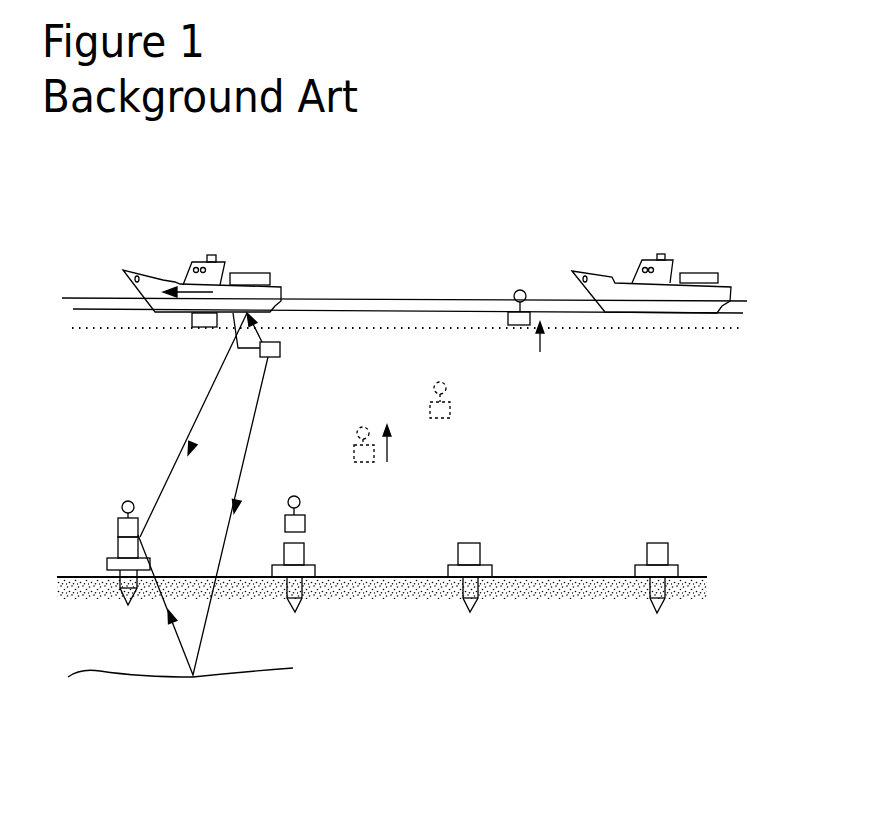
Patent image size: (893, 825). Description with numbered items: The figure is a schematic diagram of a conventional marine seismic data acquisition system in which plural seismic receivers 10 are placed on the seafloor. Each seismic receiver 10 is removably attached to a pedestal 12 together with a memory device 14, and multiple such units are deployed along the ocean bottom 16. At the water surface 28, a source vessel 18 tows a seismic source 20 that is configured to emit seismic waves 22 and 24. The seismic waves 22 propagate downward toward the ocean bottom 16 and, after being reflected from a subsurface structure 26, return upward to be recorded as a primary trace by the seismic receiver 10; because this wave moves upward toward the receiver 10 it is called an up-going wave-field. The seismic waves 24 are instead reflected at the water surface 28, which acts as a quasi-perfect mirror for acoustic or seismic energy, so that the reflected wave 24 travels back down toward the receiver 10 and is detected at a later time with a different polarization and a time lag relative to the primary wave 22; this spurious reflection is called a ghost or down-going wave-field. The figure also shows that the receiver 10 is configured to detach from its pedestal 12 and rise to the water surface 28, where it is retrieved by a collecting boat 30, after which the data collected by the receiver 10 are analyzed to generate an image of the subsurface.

The seismic receiver 10 is at (118, 547).
The pedestal 12 is at (312, 568).
The memory device 14 is at (127, 527).
The ocean bottom 16 is at (690, 577).
The source vessel 18 is at (152, 277).
The seismic source 20 is at (280, 350).
The seismic wave 22 is at (257, 422).
The seismic wave 24 is at (208, 393).
The structure 26 is at (267, 673).
The water surface 28 is at (412, 299).
The collecting boat 30 is at (590, 247).